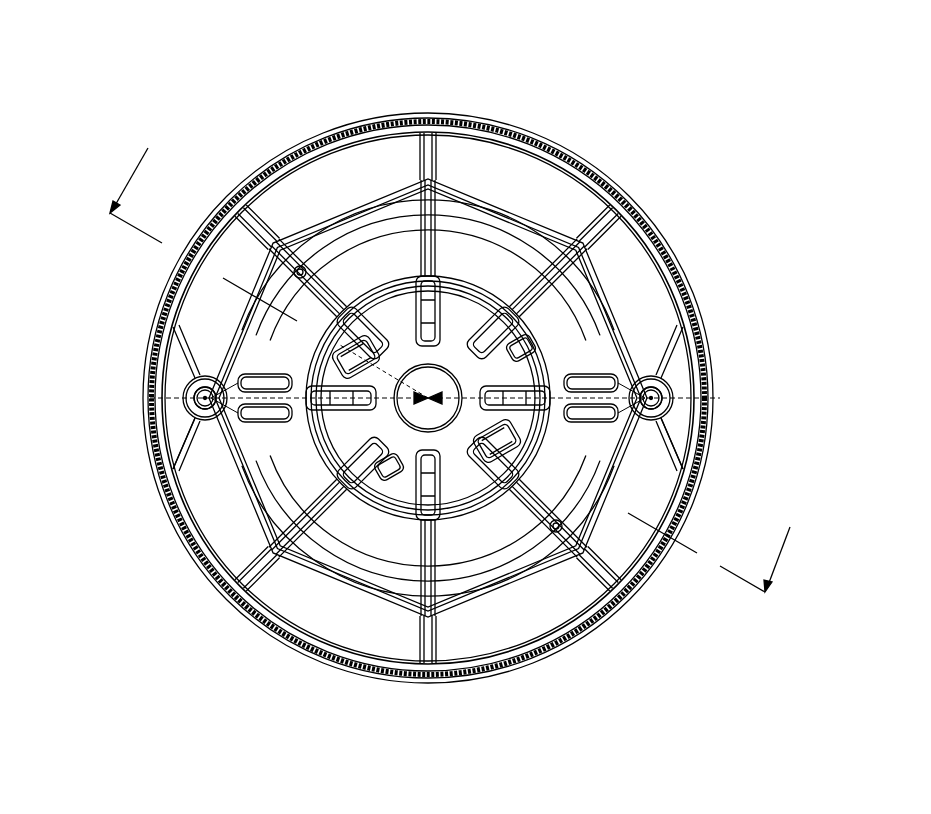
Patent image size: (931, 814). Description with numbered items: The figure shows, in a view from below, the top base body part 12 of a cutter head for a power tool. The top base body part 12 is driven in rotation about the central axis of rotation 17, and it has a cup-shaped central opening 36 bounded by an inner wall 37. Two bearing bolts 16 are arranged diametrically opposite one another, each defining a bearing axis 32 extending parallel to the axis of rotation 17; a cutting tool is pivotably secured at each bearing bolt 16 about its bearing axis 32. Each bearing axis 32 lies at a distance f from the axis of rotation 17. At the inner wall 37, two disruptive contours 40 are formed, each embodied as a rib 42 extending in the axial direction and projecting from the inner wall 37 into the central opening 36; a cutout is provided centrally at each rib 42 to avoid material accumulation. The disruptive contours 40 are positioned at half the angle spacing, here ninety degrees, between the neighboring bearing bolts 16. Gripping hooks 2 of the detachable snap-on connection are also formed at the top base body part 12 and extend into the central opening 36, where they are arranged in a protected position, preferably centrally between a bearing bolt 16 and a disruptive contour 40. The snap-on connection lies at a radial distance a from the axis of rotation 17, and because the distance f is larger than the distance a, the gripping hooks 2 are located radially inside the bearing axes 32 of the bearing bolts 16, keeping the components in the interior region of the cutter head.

The top base body part 12 is at (265, 95).
The gripping hook 2 is at (200, 393).
The bearing bolt 16 is at (197, 398).
The bearing axis 32 is at (203, 400).
The axis of rotation 17 is at (327, 466).
The central opening 36 is at (537, 362).
The inner wall 37 is at (545, 335).
The disruptive contour 40 is at (460, 505).
The rib 42 is at (520, 300).
The distance a is at (182, 432).
The distance f is at (668, 426).